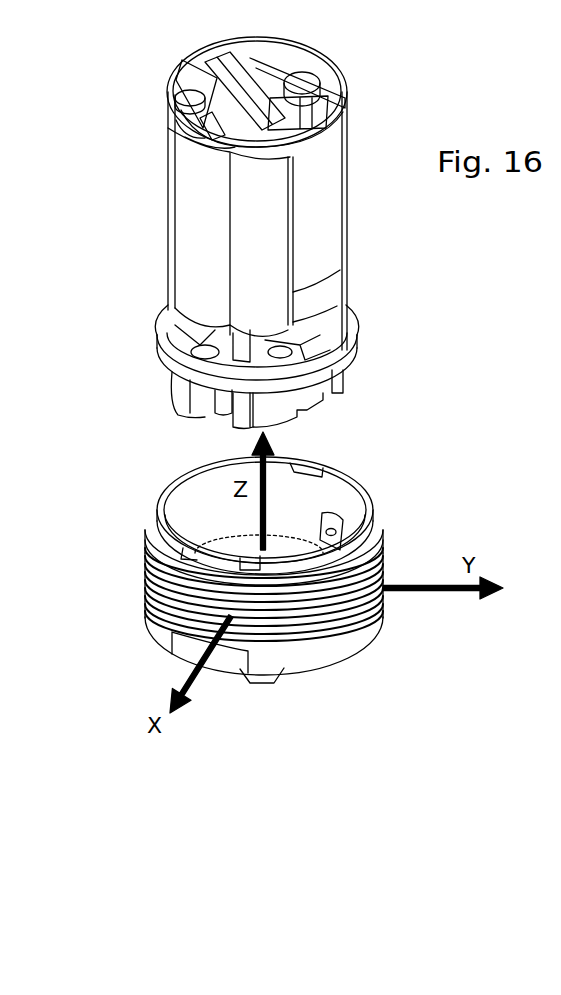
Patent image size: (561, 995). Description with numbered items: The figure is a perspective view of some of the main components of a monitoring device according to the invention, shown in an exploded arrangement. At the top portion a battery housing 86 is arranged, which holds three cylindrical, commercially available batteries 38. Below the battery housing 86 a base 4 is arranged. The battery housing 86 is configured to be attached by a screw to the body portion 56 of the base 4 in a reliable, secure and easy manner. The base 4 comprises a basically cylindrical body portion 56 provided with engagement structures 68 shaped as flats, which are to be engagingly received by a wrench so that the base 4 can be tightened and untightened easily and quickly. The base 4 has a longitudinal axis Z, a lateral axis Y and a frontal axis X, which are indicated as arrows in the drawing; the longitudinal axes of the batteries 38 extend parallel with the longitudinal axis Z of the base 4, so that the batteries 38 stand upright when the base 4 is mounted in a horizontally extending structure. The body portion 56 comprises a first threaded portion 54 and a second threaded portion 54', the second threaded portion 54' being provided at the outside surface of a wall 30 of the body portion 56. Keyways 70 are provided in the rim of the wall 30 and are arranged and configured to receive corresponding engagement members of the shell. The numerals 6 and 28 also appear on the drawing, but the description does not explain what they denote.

The base 4 is at (81, 651).
The locating lug 6 is at (267, 683).
The threaded housing body 28 is at (367, 537).
The wall 30 is at (172, 488).
The batteries 38 is at (187, 257).
The first threaded portion 54 is at (215, 594).
The second threaded portion 54' is at (217, 546).
The body portion 56 is at (382, 642).
The engagement structures 68 is at (188, 650).
The keyways 70 is at (318, 468).
The battery housing 86 is at (165, 183).